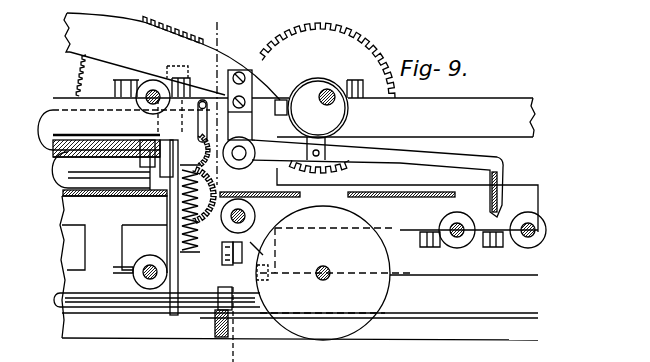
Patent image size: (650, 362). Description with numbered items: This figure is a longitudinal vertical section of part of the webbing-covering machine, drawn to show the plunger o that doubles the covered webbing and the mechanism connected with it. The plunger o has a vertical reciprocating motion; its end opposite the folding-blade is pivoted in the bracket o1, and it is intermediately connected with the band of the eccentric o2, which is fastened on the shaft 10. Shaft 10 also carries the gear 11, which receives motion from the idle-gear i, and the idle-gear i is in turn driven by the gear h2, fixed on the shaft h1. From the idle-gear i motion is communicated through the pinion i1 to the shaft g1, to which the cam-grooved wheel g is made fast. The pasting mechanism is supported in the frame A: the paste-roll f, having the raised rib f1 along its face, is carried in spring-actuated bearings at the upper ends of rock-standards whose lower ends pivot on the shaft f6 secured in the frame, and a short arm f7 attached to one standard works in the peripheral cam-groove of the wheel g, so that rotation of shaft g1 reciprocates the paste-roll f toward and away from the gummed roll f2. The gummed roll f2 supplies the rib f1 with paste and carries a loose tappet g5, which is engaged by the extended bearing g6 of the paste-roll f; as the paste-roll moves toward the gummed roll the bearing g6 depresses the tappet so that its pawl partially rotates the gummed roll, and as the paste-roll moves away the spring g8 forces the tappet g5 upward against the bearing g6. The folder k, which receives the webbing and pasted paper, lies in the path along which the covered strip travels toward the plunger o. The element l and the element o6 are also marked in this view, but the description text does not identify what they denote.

The gear h2 is at (172, 56).
The shaft h1 is at (153, 80).
The folder k is at (216, 103).
The gear 11 is at (345, 48).
The eccentric o2 is at (318, 108).
The shaft 10 is at (334, 92).
The paste-roll f is at (99, 150).
The rack l is at (330, 208).
The gummed roll f2 is at (47, 267).
The rib f1 is at (300, 268).
The shaft g1 is at (150, 264).
The spring g8 is at (182, 213).
The extended bearing g6 is at (190, 208).
The shaft f6 is at (157, 293).
The short arm f7 is at (234, 302).
The pinion i1 is at (205, 178).
The idle-gear i is at (204, 121).
The loose tappet g5 is at (179, 118).
The bracket o1 is at (239, 119).
The bearing o6 is at (256, 178).
The plunger o is at (377, 177).
The frame A is at (514, 194).
The wheel g is at (333, 273).